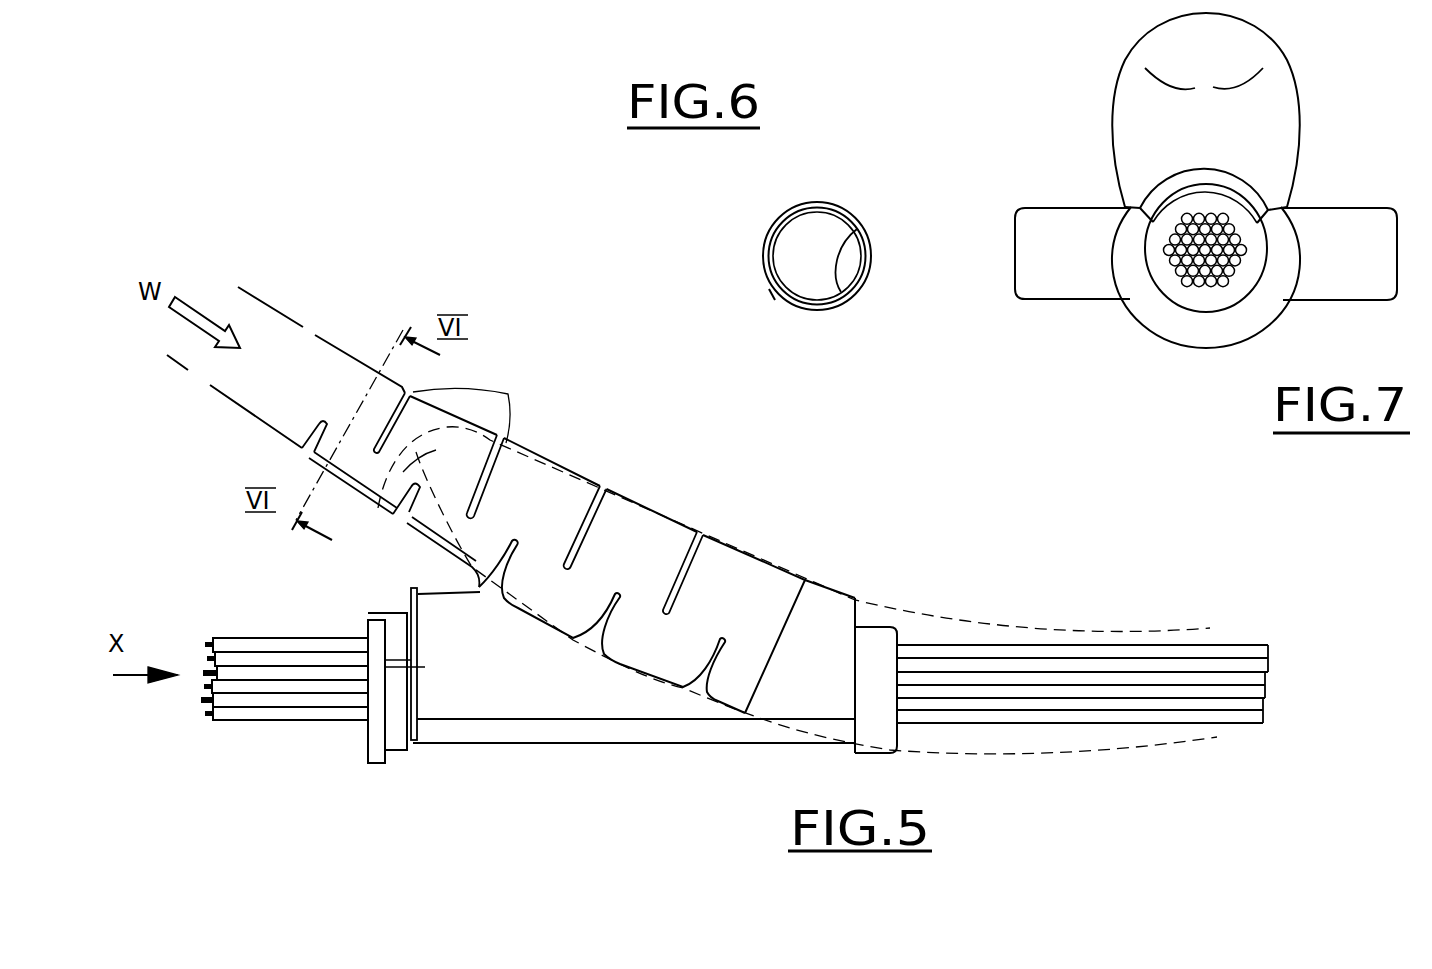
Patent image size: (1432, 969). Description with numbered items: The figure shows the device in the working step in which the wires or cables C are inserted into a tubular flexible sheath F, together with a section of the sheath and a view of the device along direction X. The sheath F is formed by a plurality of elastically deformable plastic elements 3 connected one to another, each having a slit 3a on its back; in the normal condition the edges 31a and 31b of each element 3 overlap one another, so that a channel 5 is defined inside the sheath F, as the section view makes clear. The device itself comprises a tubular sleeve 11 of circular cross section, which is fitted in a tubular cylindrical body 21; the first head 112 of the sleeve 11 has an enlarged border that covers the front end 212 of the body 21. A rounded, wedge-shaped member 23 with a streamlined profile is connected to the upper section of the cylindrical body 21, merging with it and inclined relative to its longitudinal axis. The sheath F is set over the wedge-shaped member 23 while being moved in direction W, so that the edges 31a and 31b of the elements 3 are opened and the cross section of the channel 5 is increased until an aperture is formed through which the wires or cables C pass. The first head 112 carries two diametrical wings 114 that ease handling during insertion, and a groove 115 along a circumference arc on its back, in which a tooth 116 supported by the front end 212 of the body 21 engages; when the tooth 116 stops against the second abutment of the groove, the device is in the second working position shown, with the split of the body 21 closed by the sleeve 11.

In FIG. 5, the elements 3 is at (553, 610).
In FIG. 6, the elements 3 is at (828, 197).
In FIG. 5, the slit 3a is at (640, 450).
In FIG. 5, the channel 5 is at (1285, 687).
In FIG. 6, the channel 5 is at (788, 262).
In FIG. 5, the tubular sleeve 11 is at (523, 735).
In FIG. 7, the tubular sleeve 11 is at (1210, 302).
In FIG. 5, the tubular cylindrical body 21 is at (487, 698).
In FIG. 7, the tubular cylindrical body 21 is at (1180, 192).
In FIG. 5, the wedge-shaped member 23 is at (374, 515).
In FIG. 7, the wedge-shaped member 23 is at (1253, 45).
In FIG. 6, the edge 31a is at (780, 297).
In FIG. 6, the edge 31b is at (847, 237).
In FIG. 7, the first head 112 is at (1230, 338).
In FIG. 5, the diametrical wings 114 is at (372, 632).
In FIG. 7, the diametrical wings 114 is at (1058, 292).
In FIG. 5, the groove 115 is at (392, 738).
In FIG. 5, the tooth 116 is at (410, 667).
In FIG. 7, the front end 212 is at (1245, 187).
In FIG. 5, the wires or cables C is at (263, 688).
In FIG. 5, the tubular flexible sheath F is at (285, 337).